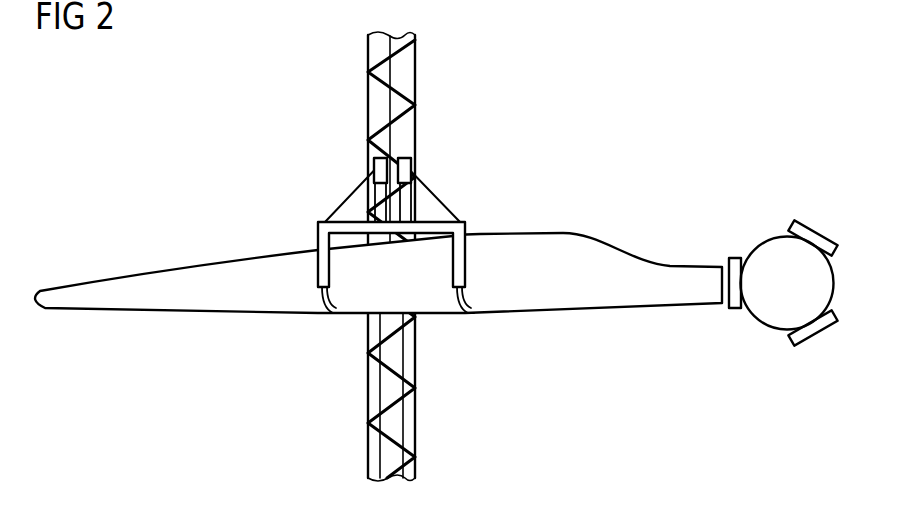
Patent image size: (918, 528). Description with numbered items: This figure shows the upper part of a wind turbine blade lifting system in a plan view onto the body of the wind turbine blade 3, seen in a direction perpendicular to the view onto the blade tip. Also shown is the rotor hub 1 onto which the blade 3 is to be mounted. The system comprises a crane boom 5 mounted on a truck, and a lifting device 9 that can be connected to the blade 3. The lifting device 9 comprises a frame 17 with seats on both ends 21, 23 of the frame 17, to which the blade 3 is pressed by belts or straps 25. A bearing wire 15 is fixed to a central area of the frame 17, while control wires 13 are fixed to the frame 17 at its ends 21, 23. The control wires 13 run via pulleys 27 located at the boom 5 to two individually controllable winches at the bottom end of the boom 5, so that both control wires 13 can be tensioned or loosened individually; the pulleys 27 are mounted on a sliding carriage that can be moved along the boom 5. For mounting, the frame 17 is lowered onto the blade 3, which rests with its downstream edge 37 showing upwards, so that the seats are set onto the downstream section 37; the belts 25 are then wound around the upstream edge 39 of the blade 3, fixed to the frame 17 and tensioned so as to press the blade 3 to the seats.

The rotor hub 1 is at (770, 318).
The wind turbine blade 3 is at (378, 279).
The crane boom 5 is at (415, 256).
The lifting device 9 is at (387, 211).
The control wires 13 is at (352, 192).
The bearing wire 15 is at (393, 63).
The frame 17 is at (394, 249).
The first frame end 21 is at (318, 228).
The second frame end 23 is at (465, 228).
The belts or straps 25 is at (329, 305).
The pulleys 27 is at (372, 160).
The downstream edge 37 is at (167, 270).
The upstream edge 39 is at (200, 315).